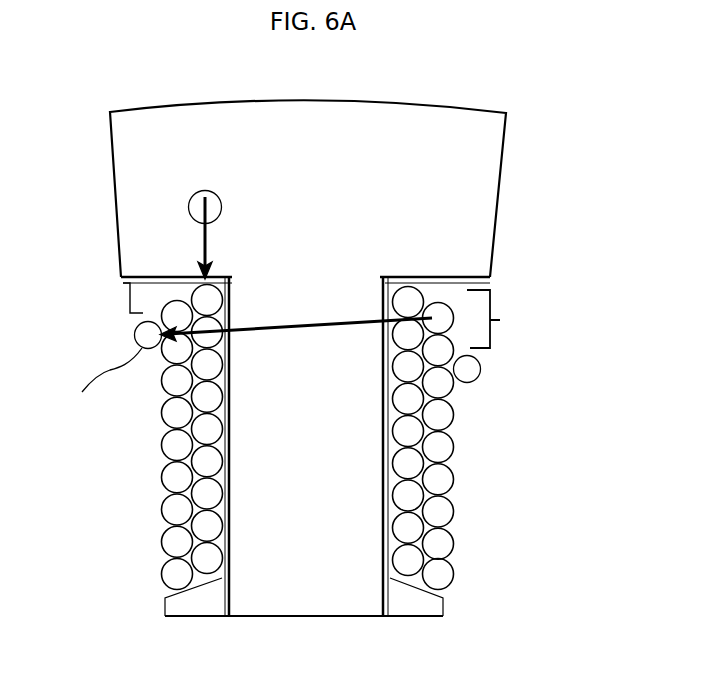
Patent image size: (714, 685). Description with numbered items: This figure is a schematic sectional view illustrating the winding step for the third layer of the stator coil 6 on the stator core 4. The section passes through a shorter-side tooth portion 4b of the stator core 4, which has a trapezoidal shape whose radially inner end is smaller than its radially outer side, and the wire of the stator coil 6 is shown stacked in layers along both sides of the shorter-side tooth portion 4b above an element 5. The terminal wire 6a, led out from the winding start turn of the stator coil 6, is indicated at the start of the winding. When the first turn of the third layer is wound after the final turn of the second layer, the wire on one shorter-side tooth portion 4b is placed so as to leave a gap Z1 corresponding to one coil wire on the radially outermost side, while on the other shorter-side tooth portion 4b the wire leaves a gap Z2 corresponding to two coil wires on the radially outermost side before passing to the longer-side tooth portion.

The stator core 4 is at (332, 135).
The shorter-side tooth portion 4b is at (312, 578).
The insulator / bobbin 5 is at (413, 602).
The stator coil 6 is at (480, 368).
The terminal wire 6a is at (188, 207).
The gap Z1 is at (127, 302).
The gap Z2 is at (497, 320).